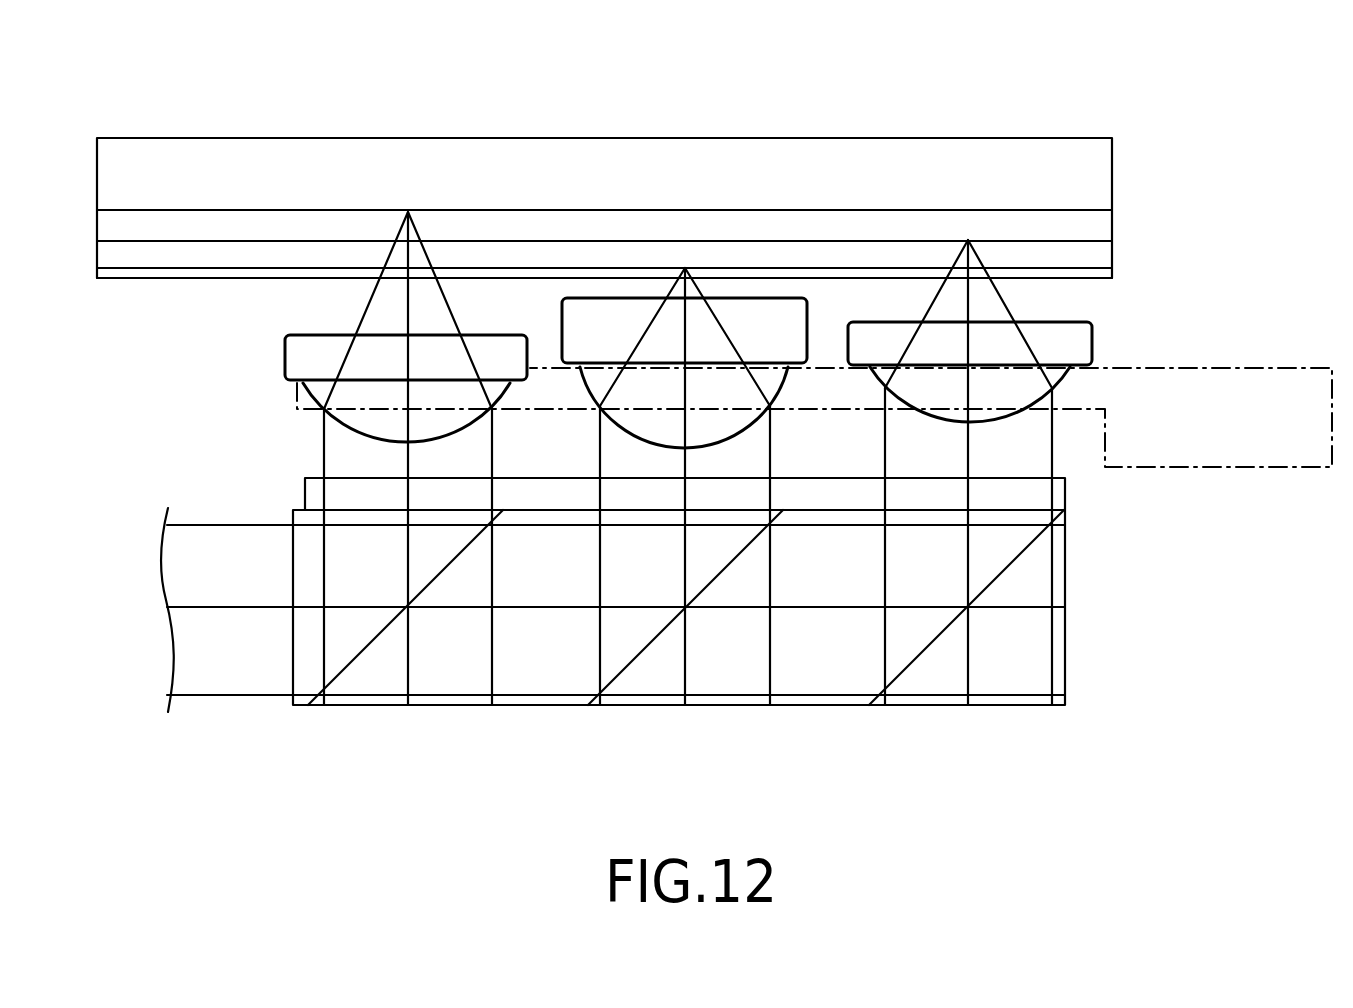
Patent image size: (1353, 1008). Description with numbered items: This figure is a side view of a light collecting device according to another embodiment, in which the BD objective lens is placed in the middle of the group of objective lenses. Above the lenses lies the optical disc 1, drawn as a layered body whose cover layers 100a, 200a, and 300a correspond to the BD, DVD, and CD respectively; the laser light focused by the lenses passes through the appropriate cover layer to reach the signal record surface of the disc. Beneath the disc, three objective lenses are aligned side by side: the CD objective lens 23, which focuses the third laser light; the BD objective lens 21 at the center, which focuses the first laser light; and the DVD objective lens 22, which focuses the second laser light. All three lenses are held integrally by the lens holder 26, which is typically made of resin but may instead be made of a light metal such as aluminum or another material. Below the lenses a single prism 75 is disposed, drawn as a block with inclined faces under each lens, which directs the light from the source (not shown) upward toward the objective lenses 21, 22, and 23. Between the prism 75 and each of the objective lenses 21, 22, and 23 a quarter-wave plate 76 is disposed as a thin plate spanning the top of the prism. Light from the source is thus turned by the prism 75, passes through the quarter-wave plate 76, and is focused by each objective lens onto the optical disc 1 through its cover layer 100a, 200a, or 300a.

The optical disc 1 is at (673, 137).
The BD objective lens 21 is at (588, 320).
The DVD objective lens 22 is at (882, 330).
The CD objective lens 23 is at (330, 347).
The lens holder 26 is at (1157, 470).
The prism 75 is at (680, 675).
The λ/4 plate 76 is at (315, 492).
The cover layer of BD 100a is at (1112, 278).
The cover layer of DVD 200a is at (1103, 257).
The cover layer of CD 300a is at (1103, 232).